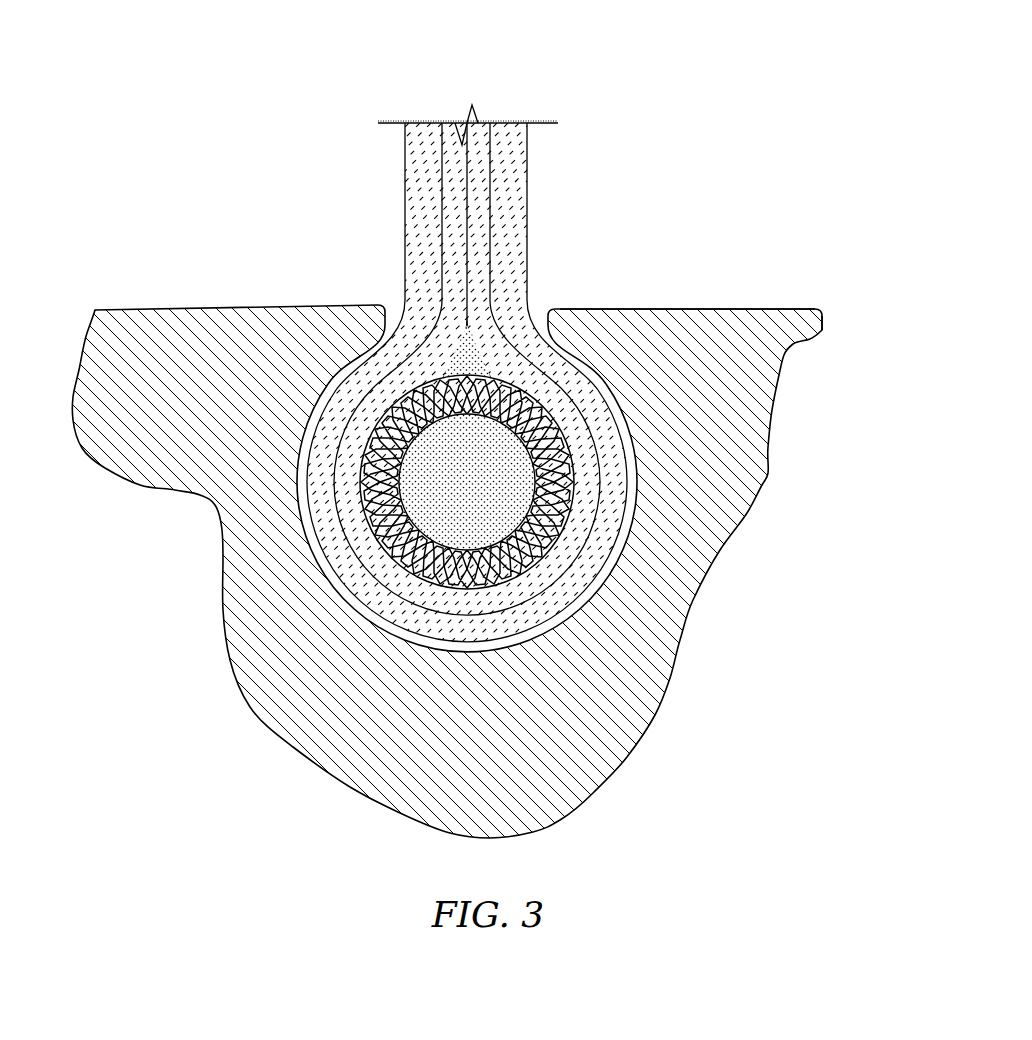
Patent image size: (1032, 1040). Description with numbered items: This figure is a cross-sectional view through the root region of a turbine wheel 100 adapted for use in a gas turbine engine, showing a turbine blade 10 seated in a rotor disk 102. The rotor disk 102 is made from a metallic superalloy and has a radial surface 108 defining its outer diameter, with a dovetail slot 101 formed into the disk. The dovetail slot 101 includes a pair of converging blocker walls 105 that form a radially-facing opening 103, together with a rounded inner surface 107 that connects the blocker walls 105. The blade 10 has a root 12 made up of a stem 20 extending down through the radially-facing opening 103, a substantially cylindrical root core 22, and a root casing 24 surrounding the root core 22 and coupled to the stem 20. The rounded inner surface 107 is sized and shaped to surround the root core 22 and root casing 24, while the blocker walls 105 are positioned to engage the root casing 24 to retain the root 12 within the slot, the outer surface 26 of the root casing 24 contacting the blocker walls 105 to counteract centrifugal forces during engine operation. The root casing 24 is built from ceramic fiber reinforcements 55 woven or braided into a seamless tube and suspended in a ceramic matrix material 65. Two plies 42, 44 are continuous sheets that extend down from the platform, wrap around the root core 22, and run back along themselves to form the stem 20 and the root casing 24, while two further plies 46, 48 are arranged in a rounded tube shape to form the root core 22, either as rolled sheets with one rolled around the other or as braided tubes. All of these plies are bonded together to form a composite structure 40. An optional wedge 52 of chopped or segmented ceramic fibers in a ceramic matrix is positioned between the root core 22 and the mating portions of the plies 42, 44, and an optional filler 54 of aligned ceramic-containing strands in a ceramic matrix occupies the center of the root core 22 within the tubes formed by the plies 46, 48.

The turbine blade 10 is at (582, 142).
The root 12 is at (553, 251).
The stem 20 is at (535, 210).
The root core 22 is at (578, 483).
The root casing 24 is at (618, 395).
The outer surface 26 is at (603, 377).
The composite structure 40 is at (505, 100).
The ply 42 is at (428, 188).
The ply 44 is at (460, 227).
The ply 46 is at (582, 508).
The ply 48 is at (552, 541).
The wedge 52 is at (458, 354).
The filler 54 is at (440, 568).
The ceramic fiber reinforcements 55 is at (358, 493).
The ceramic matrix material 65 is at (364, 515).
The turbine wheel 100 is at (722, 113).
The dovetail slot 101 is at (390, 642).
The rotor disk 102 is at (829, 317).
The radially-facing opening 103 is at (538, 298).
The blocker walls 105 is at (372, 325).
The rounded inner surface 107 is at (295, 482).
The radial surface 108 is at (751, 308).